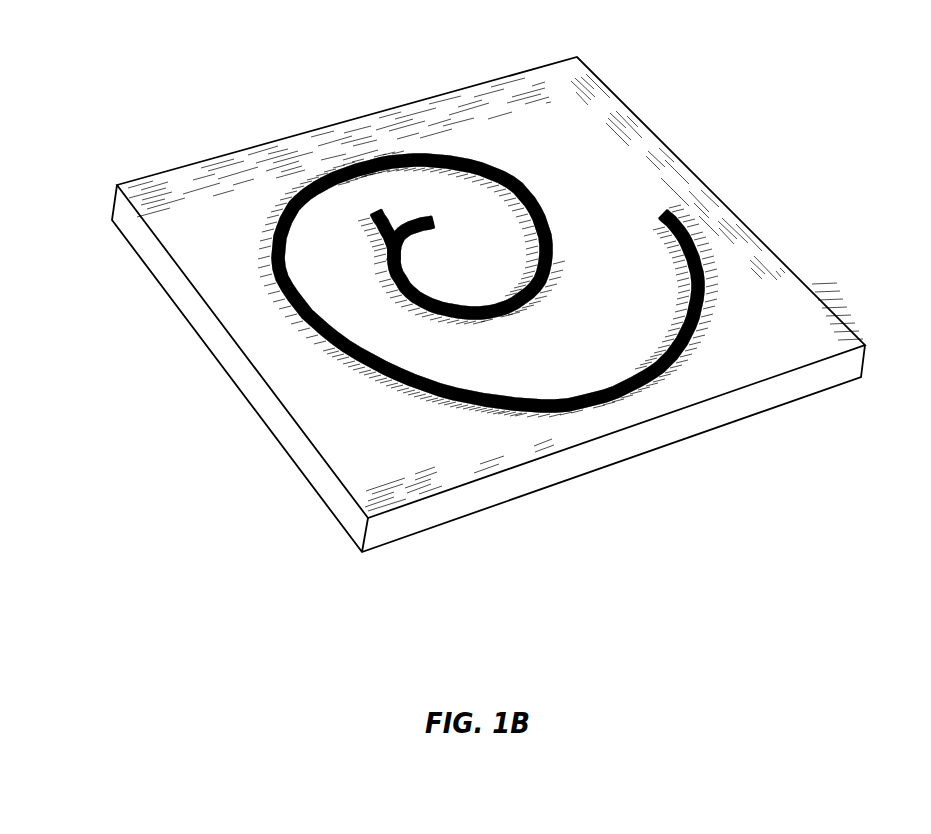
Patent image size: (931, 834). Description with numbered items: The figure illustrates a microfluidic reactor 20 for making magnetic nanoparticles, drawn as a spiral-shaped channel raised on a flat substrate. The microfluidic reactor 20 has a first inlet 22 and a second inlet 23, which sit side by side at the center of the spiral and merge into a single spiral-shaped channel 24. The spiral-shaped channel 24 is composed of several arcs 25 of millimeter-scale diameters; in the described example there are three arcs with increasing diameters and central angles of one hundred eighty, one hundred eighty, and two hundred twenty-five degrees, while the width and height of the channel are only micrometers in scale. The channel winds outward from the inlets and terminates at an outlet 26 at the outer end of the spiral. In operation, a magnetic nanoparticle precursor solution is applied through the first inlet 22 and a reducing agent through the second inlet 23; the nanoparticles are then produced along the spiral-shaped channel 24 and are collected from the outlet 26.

The microfluidic reactor 20 is at (107, 63).
The first inlet 22 is at (376, 205).
The second inlet 23 is at (436, 217).
The spiral-shaped channel 24 is at (304, 326).
The arcs 25 is at (313, 179).
The outlet 26 is at (666, 209).